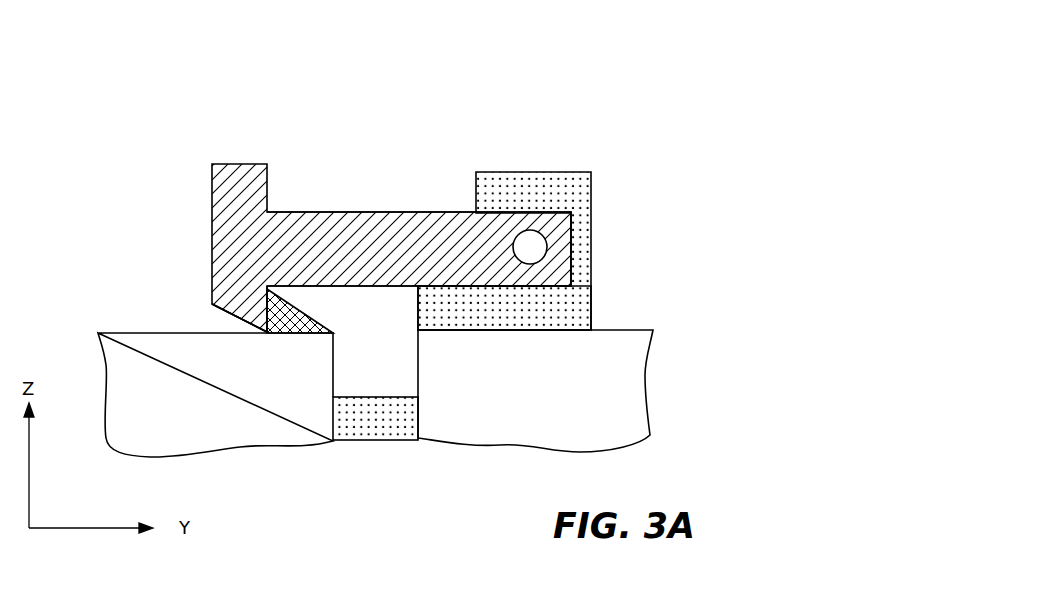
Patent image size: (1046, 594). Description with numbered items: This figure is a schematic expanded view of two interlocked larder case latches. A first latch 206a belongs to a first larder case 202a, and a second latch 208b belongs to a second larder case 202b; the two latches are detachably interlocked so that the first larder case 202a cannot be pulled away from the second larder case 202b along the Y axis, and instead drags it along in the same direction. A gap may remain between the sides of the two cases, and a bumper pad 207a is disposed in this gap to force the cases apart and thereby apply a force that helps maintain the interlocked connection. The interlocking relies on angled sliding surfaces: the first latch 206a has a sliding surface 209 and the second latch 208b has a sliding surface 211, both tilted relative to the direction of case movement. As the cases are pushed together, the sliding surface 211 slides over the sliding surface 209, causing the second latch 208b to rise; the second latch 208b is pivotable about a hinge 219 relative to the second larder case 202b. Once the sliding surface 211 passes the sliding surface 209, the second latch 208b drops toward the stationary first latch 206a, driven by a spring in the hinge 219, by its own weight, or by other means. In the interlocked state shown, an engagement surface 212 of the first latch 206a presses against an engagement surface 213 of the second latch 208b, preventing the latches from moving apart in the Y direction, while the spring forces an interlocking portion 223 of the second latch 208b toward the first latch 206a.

The first larder case 202a is at (140, 357).
The second larder case 202b is at (600, 393).
The bumper pad 207a is at (383, 427).
The hinge 219 is at (530, 244).
The engagement surface 213 is at (280, 320).
The interlocking portion 223 is at (233, 183).
The second latch 208b is at (422, 212).
The sliding surface 209 is at (312, 305).
The first latch 206a is at (283, 293).
The engagement surface 212 is at (265, 318).
The sliding surface 211 is at (233, 316).